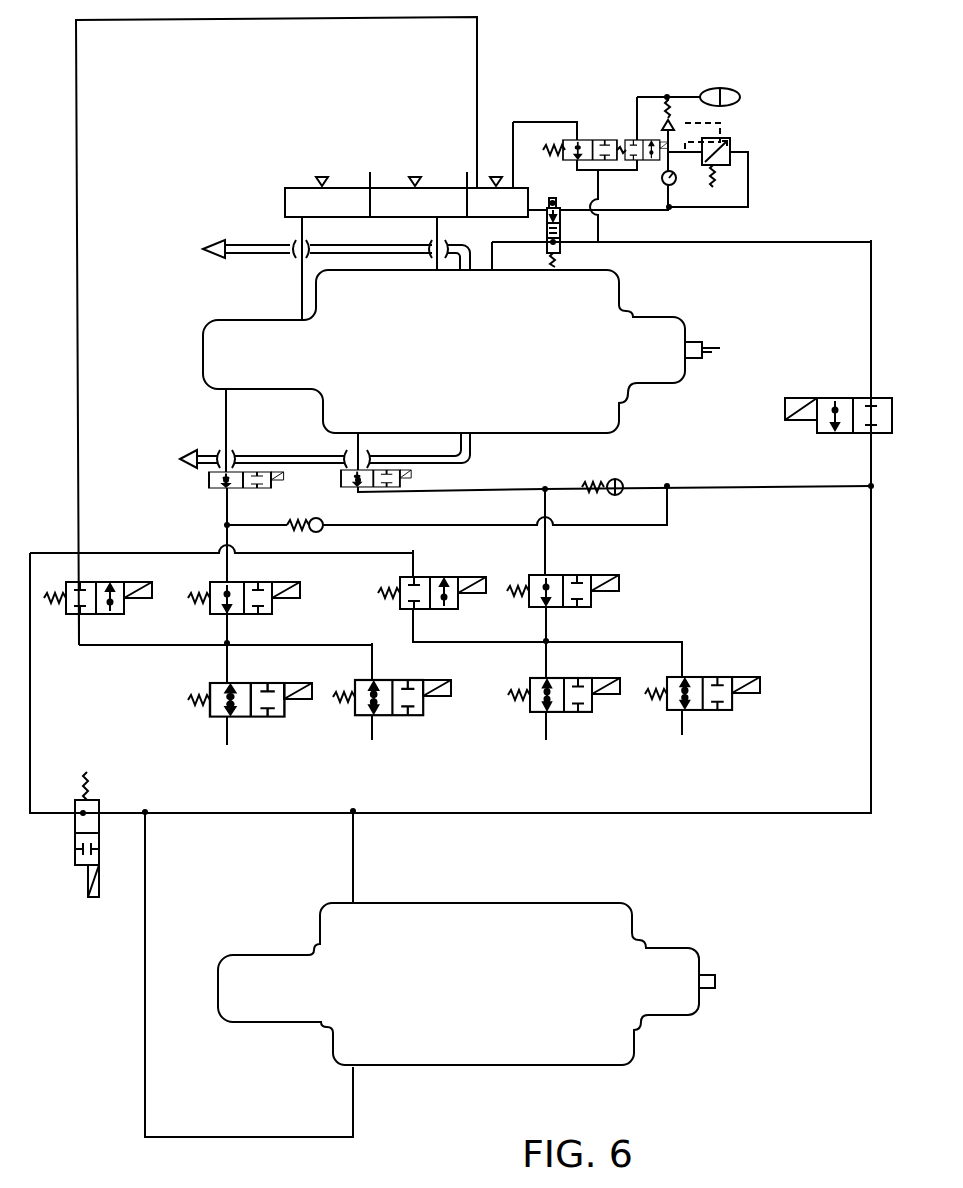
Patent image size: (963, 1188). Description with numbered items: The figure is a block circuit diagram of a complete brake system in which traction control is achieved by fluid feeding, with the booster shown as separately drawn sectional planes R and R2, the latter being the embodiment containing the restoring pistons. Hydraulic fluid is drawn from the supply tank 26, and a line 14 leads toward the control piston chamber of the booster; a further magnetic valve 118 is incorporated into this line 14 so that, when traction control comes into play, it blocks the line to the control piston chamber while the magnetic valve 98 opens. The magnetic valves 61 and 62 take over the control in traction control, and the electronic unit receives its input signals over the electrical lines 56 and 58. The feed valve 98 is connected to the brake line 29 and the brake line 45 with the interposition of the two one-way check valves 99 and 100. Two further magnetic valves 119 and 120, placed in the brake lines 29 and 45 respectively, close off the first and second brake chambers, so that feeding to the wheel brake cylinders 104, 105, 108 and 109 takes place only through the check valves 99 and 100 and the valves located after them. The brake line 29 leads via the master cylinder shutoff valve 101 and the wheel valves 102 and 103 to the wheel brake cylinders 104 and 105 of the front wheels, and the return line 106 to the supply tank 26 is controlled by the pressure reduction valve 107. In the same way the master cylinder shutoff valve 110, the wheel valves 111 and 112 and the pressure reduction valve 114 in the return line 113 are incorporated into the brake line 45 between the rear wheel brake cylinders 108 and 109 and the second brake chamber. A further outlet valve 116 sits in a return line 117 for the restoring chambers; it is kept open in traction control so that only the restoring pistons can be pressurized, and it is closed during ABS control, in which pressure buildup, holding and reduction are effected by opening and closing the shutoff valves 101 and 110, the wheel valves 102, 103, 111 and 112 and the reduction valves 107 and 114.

The supply tank 26 is at (282, 182).
The electrical line 56 is at (248, 245).
The booster sectional plane R is at (640, 302).
The exemplary embodiment with restoring pistons R2 is at (645, 932).
The magnetic valve 61 is at (585, 140).
The magnetic valve 62 is at (637, 140).
The line 14 is at (598, 187).
The magnetic valve 118 is at (562, 246).
The magnetic valve 98 is at (840, 398).
The brake line 45 is at (223, 417).
The electrical line 58 is at (258, 452).
The magnetic valve 119 is at (218, 492).
The magnetic valve 120 is at (400, 480).
The one-way check valve 100 is at (316, 518).
The brake line 29 is at (545, 488).
The one-way check valve 99 is at (622, 480).
The pressure reduction valve 114 is at (102, 582).
The master cylinder shutoff valve 110 is at (272, 605).
The return line 113 is at (120, 647).
The return line 106 is at (415, 563).
The pressure reduction valve 107 is at (458, 608).
The master cylinder shutoff valve 101 is at (587, 575).
The wheel valve 102 is at (570, 678).
The wheel valve 103 is at (705, 677).
The wheel valve 111 is at (272, 718).
The wheel valve 112 is at (418, 715).
The wheel brake cylinder 108 is at (250, 768).
The wheel brake cylinder 109 is at (387, 760).
The wheel brake cylinder 104 is at (560, 760).
The wheel brake cylinder 105 is at (697, 760).
The outlet valve 116 is at (75, 843).
The return line 117 is at (145, 955).